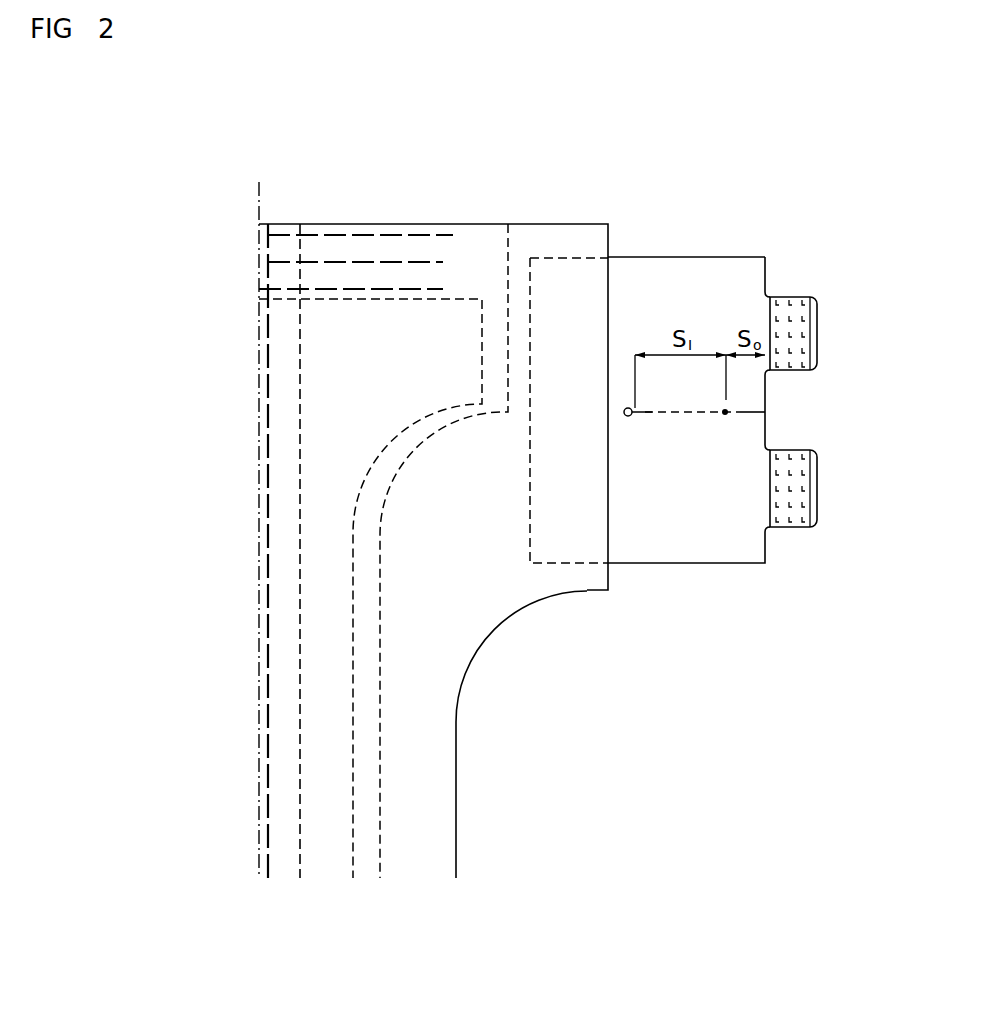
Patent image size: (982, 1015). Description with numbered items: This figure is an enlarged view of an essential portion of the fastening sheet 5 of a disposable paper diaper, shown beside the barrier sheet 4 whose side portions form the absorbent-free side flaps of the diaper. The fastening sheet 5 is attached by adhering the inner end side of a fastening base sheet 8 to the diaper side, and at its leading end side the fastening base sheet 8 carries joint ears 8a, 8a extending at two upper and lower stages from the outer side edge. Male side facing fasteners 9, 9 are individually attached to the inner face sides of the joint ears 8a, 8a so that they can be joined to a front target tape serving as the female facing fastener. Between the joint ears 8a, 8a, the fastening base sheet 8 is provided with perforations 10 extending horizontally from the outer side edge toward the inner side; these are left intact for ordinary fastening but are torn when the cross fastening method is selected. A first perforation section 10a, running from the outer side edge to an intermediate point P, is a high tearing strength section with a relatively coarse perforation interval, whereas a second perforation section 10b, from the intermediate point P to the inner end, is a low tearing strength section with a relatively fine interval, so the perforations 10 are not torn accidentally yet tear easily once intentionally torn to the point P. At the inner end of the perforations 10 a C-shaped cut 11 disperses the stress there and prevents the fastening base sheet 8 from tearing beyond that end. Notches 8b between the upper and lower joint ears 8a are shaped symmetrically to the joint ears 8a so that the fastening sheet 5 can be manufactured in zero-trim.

The barrier sheet 4 is at (437, 806).
The fastening sheet 5 is at (706, 253).
The fastening base sheet 8 is at (674, 283).
The joint ear 8a is at (818, 336).
The notch 8b is at (768, 401).
The male side facing fastener 9 is at (793, 305).
The perforations 10 is at (664, 420).
The first perforation section 10a is at (743, 416).
The second perforation section 10b is at (650, 411).
The C-shaped cut 11 is at (628, 417).
The intermediate point P is at (720, 417).